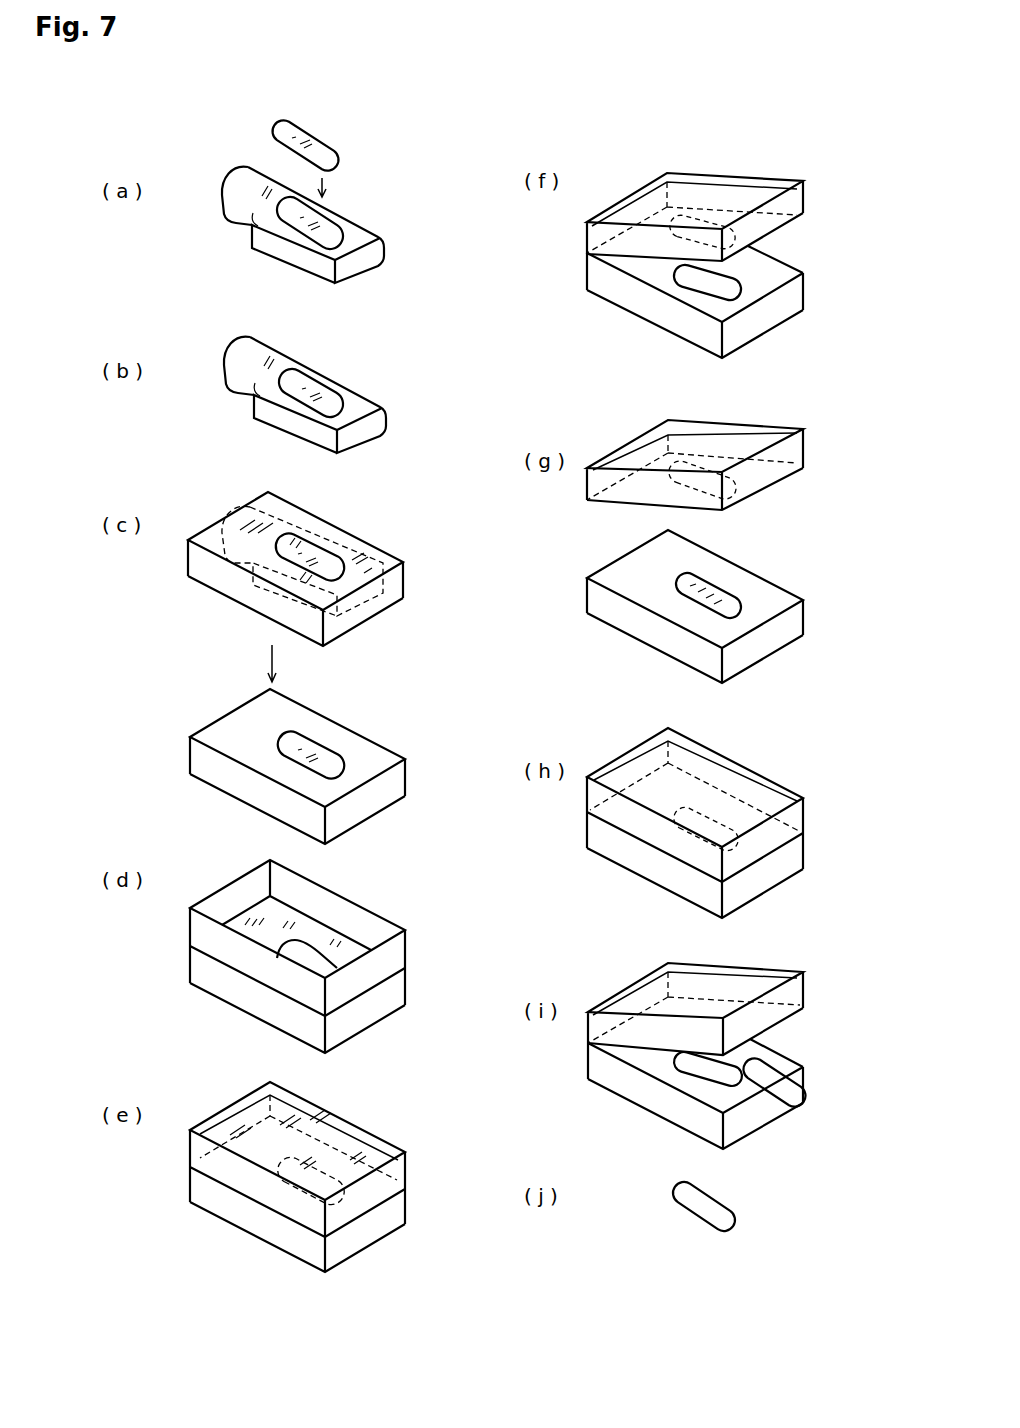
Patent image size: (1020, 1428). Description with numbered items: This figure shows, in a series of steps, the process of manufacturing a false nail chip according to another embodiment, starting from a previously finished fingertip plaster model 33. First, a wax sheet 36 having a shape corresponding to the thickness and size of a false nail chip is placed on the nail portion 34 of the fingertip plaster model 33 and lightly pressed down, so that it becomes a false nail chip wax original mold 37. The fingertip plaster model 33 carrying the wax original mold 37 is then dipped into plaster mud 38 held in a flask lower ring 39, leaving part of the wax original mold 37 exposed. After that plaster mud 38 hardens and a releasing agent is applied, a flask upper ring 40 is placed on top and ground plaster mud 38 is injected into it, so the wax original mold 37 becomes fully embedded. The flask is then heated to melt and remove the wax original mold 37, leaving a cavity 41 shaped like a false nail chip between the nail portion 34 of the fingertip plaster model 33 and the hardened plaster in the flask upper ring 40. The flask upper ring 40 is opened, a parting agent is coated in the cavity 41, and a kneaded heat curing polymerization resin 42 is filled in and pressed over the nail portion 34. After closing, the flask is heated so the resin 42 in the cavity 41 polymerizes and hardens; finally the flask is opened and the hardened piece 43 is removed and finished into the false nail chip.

The fingertip plaster model 33 is at (268, 239).
The nail portion 34 is at (322, 228).
The wax sheet 36 is at (320, 150).
The false nail chip wax original mold 37 is at (320, 392).
The plaster mud 38 is at (380, 562).
The flask lower ring 39 is at (215, 573).
The flask upper ring 40 is at (200, 933).
The cavity 41 is at (680, 218).
The heat curing polymerization resin 42 is at (723, 596).
The molded product 43 is at (795, 1095).